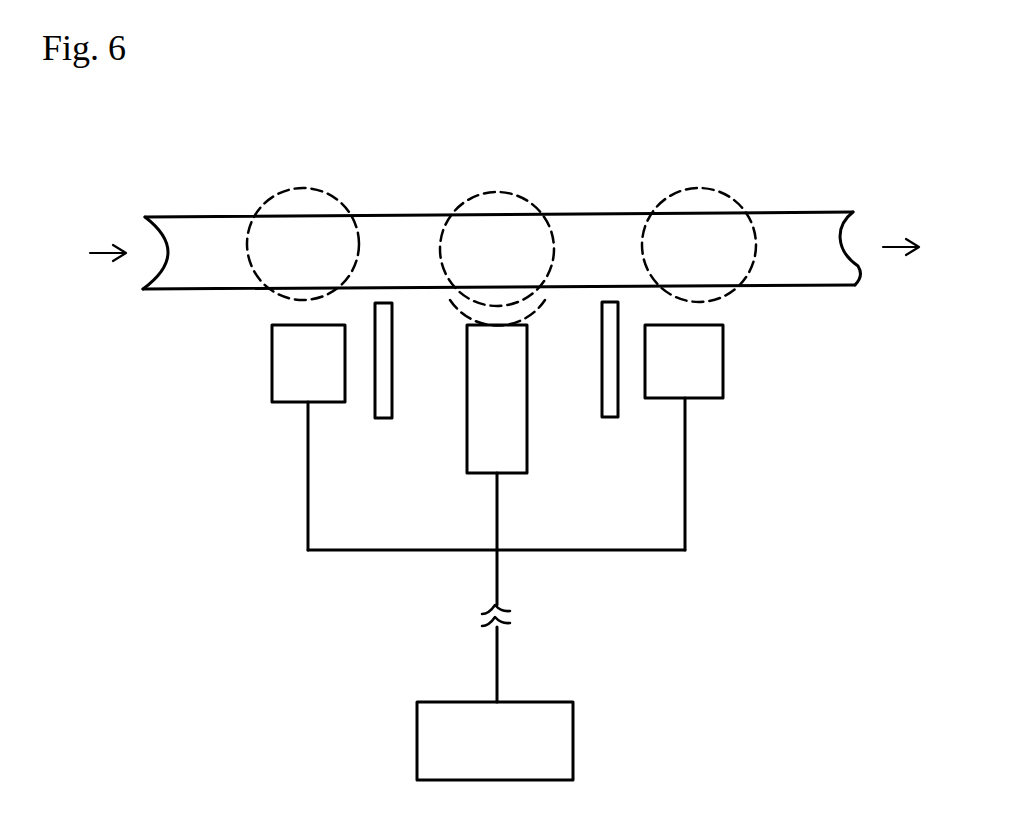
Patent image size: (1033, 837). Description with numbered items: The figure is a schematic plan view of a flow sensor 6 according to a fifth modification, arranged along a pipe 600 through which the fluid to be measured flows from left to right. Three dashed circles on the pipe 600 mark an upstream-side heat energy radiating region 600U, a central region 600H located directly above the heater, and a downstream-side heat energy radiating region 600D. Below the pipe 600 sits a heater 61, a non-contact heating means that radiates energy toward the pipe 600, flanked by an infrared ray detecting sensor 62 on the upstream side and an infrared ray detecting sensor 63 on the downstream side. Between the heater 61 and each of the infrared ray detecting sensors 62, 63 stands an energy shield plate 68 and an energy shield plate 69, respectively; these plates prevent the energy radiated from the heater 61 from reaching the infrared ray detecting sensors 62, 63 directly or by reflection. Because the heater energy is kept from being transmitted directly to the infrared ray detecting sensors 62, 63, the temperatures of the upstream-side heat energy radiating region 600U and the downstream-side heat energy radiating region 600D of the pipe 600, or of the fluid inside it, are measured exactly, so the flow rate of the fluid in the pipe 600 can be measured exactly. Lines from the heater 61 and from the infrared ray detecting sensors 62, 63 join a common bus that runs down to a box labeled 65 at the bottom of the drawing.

The flow sensor 6 is at (762, 453).
The pipe 600 is at (517, 212).
The upstream-side heat energy radiating region 600U is at (312, 190).
The bill at inspection position 600H is at (503, 195).
The downstream-side heat energy radiating region 600D is at (710, 190).
The heater 61 is at (528, 423).
The infrared ray detecting sensor 62 is at (271, 378).
The infrared ray detecting sensor 63 is at (724, 370).
The control unit 65 is at (574, 747).
The energy shield plate 68 is at (393, 360).
The energy shield plate 69 is at (601, 349).